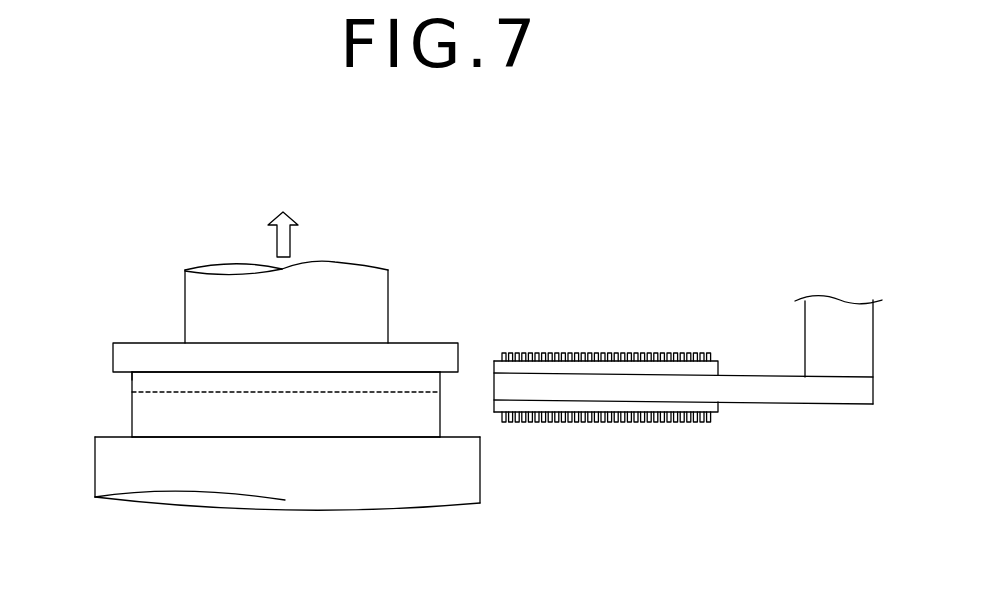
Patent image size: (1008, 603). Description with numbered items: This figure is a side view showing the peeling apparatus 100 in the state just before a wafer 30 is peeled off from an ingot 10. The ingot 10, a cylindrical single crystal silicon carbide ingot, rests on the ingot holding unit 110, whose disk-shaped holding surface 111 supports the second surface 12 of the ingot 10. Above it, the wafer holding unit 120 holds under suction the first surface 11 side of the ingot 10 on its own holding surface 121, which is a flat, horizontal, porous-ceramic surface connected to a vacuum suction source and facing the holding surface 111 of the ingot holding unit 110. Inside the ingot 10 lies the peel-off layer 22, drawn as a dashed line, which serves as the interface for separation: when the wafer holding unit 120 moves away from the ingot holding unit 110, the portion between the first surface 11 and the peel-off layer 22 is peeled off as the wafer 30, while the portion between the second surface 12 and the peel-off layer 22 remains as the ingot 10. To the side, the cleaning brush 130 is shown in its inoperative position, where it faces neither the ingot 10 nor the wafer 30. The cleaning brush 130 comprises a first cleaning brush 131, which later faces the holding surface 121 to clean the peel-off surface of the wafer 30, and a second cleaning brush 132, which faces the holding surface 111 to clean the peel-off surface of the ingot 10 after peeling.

The peeling apparatus 100 is at (112, 235).
The wafer holding unit 120 is at (203, 297).
The first surface 11 is at (165, 369).
The holding surface 121 is at (121, 372).
The ingot 10 is at (460, 424).
The second surface 12 is at (195, 437).
The peel-off layer 22 is at (247, 392).
The wafer 30 is at (320, 382).
The ingot holding unit 110 is at (110, 460).
The holding surface 111 is at (128, 436).
The cleaning brush 130 is at (504, 332).
The first cleaning brush 131 is at (653, 358).
The second cleaning brush 132 is at (668, 422).